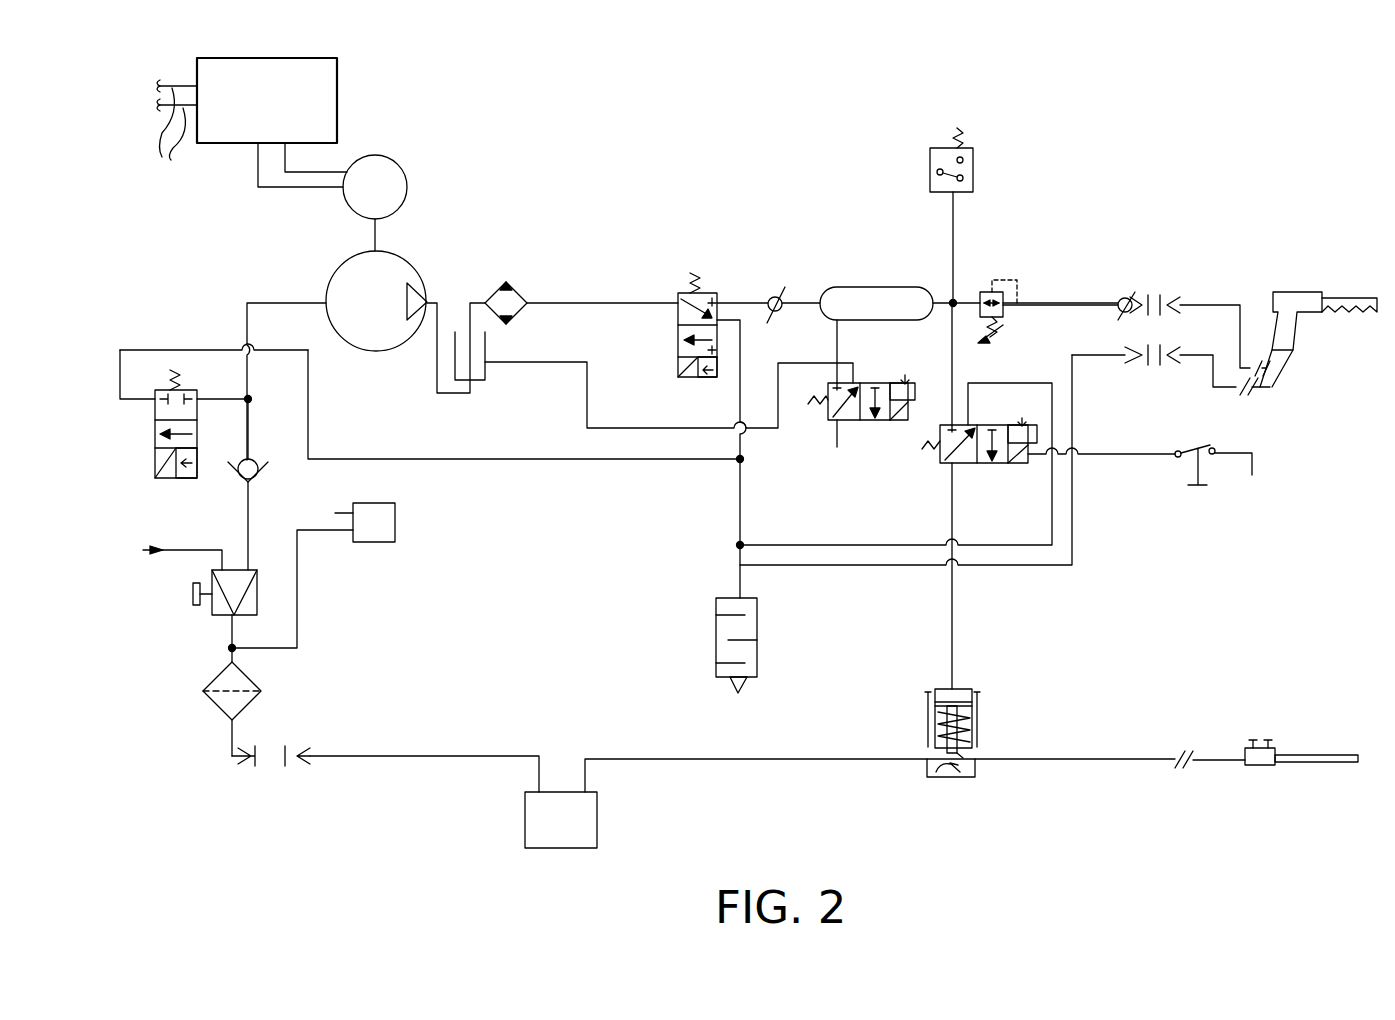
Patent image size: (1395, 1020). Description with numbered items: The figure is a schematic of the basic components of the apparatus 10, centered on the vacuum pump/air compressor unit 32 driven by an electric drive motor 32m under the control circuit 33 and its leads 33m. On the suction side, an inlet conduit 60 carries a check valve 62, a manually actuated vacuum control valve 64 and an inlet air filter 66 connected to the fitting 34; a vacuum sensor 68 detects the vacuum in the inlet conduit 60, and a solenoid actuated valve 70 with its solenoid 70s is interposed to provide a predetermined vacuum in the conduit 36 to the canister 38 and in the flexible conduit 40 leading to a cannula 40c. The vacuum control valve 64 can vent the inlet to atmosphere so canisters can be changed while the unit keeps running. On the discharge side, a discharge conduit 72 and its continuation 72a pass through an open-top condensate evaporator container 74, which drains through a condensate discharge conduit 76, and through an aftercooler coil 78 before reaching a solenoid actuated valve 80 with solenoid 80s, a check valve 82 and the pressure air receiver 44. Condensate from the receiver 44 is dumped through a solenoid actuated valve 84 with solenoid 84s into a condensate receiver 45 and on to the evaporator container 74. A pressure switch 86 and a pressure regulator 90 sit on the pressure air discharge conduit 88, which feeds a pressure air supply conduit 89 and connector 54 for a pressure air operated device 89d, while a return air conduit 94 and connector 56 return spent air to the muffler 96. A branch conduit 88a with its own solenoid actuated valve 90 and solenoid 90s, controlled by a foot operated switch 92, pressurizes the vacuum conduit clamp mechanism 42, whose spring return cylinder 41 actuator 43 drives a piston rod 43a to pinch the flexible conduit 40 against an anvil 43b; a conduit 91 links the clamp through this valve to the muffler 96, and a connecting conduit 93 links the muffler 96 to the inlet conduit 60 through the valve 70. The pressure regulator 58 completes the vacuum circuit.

The apparatus 10 is at (606, 165).
The vacuum pump/air compressor unit 32 is at (430, 278).
The electric drive motor 32m is at (408, 166).
The control circuit 33 is at (338, 103).
The control circuit leads 33m is at (190, 135).
The fitting 34 is at (290, 765).
The conduit 36 is at (420, 759).
The canister 38 is at (514, 812).
The flexible conduit 40 is at (1023, 764).
The cannula 40c is at (1298, 767).
The cylinder 41 is at (976, 712).
The vacuum conduit clamp mechanism 42 is at (912, 773).
The spring return pressure fluid cylinder and piston type actuator 43 is at (924, 697).
The piston rod 43a is at (966, 755).
The anvil 43b is at (928, 777).
The pressure air receiver 44 is at (917, 268).
The condensate receiver 45 is at (742, 472).
The connector 54 is at (1165, 292).
The connector 56 is at (1140, 362).
The regulator 58 is at (190, 583).
The inlet conduit 60 is at (286, 302).
The check valve 62 is at (262, 470).
The vacuum control valve 64 is at (267, 600).
The inlet air filter 66 is at (262, 684).
The vacuum sensor 68 is at (382, 542).
The solenoid actuated valve 70 is at (150, 480).
The solenoid actuator 70s is at (182, 480).
The discharge conduit 72 is at (437, 360).
The line 72a is at (610, 302).
The condensate evaporator container 74 is at (487, 380).
The condensate discharge conduit 76 is at (588, 385).
The aftercooler coil 78 is at (520, 286).
The solenoid actuated valve 80 is at (678, 317).
The solenoid actuator 80s is at (700, 383).
The check valve 82 is at (774, 287).
The solenoid actuated valve 84 is at (876, 380).
The solenoid actuator 84s is at (910, 408).
The pressure switch 86 is at (928, 164).
The pressure air discharge conduit 88 is at (977, 302).
The branch conduit 88a is at (953, 380).
The pressure air supply conduit 89 is at (1075, 280).
The pressure air operated device 89d is at (1296, 292).
The solenoid actuated valve 90 is at (1006, 327).
The solenoid of valve 90 90s is at (1018, 470).
The conduit 91 is at (778, 546).
The manually actuatable switch 92 is at (1170, 470).
The connecting conduit 93 is at (552, 460).
The return air conduit 94 is at (1072, 495).
The muffler 96 is at (716, 640).